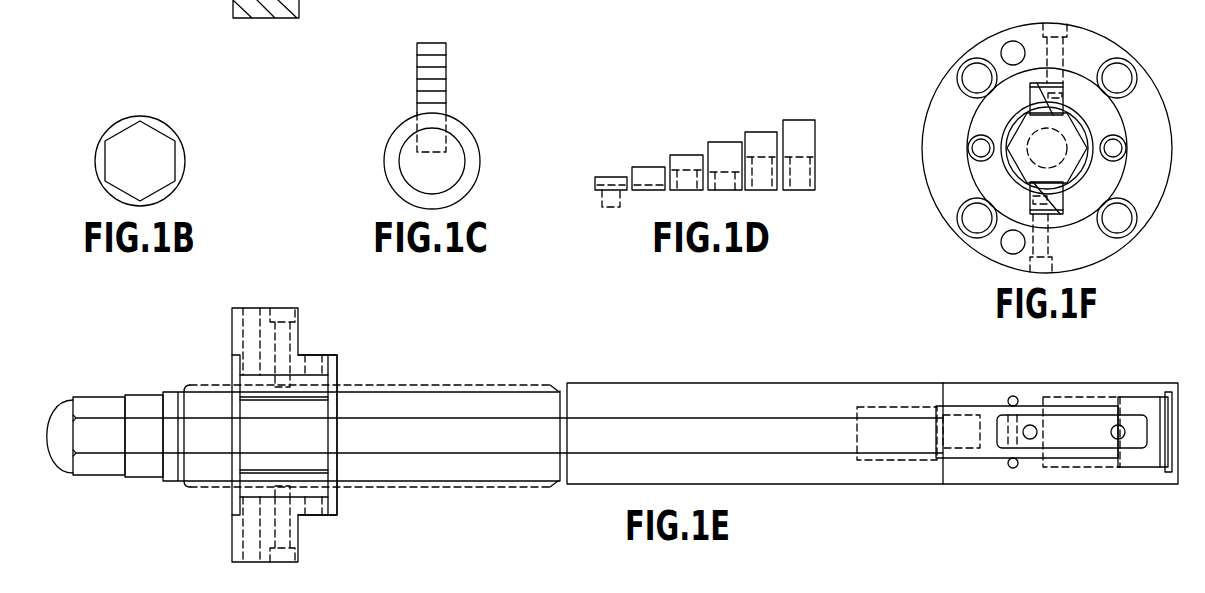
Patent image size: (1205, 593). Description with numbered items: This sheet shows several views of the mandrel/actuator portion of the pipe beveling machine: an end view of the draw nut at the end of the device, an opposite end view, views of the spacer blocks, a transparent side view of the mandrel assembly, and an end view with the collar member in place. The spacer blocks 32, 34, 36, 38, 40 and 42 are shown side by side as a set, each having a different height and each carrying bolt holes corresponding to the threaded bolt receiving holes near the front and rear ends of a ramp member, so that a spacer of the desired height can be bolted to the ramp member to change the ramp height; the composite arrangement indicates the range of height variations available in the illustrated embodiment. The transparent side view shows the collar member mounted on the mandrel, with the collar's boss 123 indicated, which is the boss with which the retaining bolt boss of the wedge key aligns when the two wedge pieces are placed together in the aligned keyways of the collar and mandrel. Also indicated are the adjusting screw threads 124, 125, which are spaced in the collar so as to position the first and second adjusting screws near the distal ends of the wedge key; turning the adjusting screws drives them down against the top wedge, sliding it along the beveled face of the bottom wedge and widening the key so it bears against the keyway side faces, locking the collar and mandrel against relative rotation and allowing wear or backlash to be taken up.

In FIG. 1D, the spacer block 32 is at (612, 177).
In FIG. 1D, the spacer block 34 is at (648, 167).
In FIG. 1D, the spacer block 36 is at (687, 155).
In FIG. 1D, the spacer block 38 is at (725, 142).
In FIG. 1D, the spacer block 40 is at (762, 132).
In FIG. 1D, the spacer block 42 is at (800, 120).
In FIG. 1E, the boss 123 is at (280, 305).
In FIG. 1E, the adjusting screw threads 124 is at (315, 357).
In FIG. 1E, the adjusting screw threads 125 is at (252, 312).